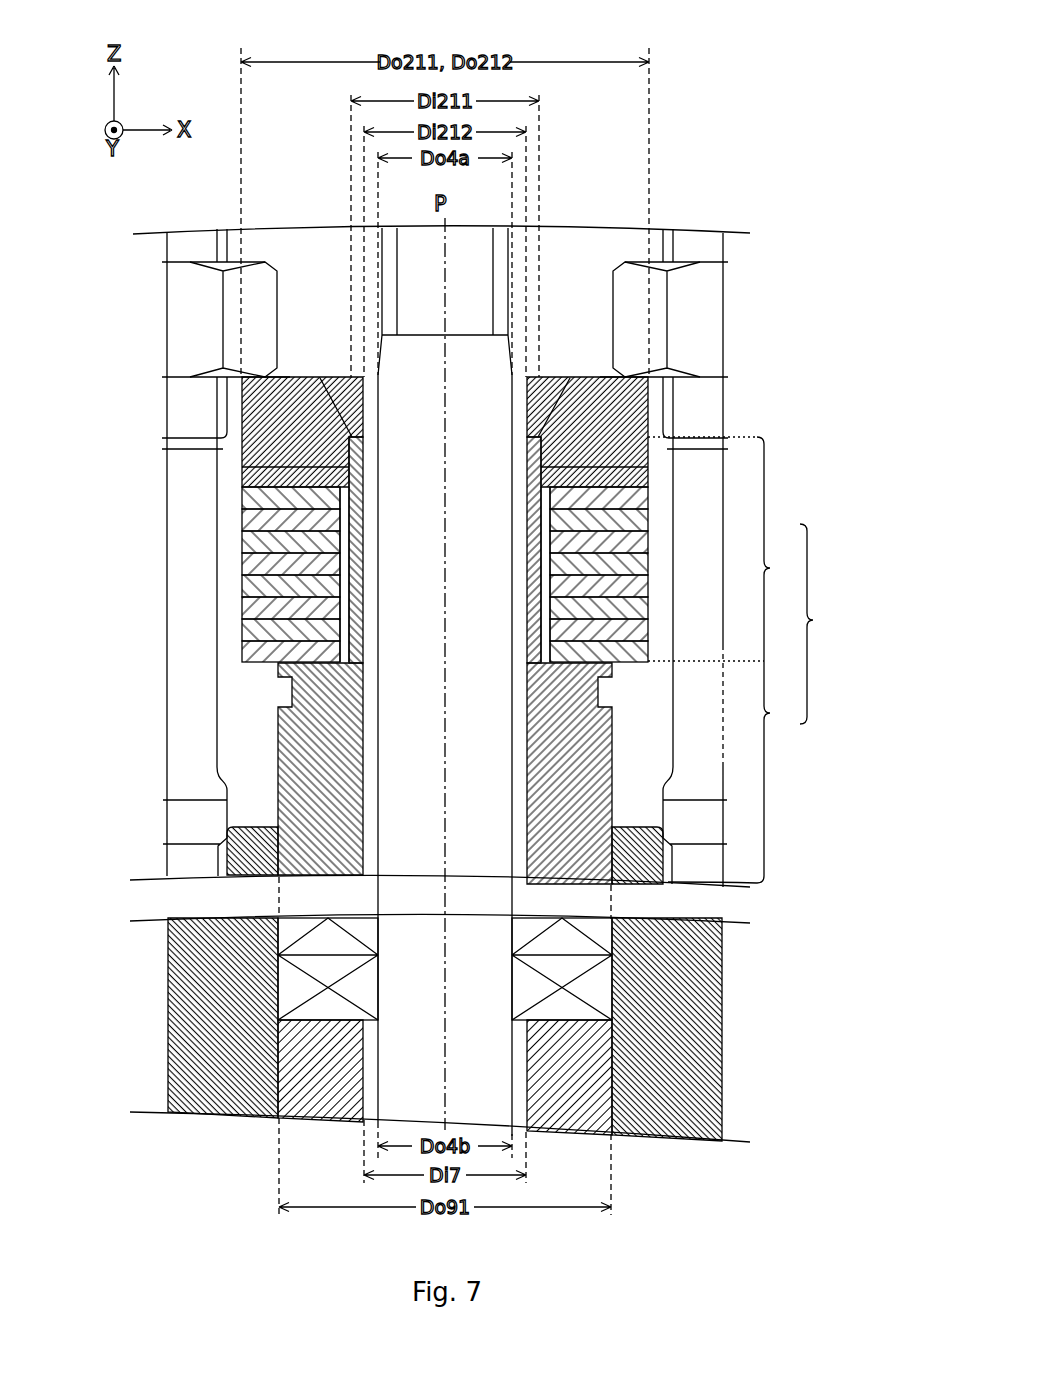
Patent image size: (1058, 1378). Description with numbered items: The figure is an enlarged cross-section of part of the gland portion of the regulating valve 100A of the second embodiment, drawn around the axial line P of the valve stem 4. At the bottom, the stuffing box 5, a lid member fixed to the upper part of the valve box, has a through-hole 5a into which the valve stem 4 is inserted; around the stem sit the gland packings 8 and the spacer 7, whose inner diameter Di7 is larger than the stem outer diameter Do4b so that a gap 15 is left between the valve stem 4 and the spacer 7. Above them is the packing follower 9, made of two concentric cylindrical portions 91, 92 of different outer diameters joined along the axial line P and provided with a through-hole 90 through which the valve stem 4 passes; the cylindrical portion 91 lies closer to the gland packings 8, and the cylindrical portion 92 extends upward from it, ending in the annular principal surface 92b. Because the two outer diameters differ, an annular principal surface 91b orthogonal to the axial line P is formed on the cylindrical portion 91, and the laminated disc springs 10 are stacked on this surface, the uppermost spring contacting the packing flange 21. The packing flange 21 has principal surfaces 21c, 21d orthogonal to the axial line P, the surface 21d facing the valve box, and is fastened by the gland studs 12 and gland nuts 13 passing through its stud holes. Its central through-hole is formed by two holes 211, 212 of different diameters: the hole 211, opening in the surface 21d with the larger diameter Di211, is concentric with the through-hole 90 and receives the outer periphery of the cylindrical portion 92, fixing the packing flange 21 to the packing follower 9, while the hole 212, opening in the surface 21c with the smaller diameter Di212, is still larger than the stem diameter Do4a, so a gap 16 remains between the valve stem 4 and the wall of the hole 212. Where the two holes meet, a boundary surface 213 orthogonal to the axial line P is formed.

The regulating valve 100A is at (771, 108).
The valve stem 4 is at (400, 692).
The stuffing box 5 is at (705, 1088).
The through-hole 5a is at (620, 1050).
The spacer 7 is at (297, 1050).
The gland packings 8 is at (287, 983).
The packing follower 9 is at (815, 624).
The through-hole 90 is at (524, 699).
The cylindrical portion 91 is at (539, 660).
The principal surface 91b is at (250, 649).
The cylindrical portion 92 is at (724, 549).
The principal surface 92b is at (553, 380).
The disc springs 10 is at (253, 587).
The gland studs 12 is at (185, 543).
The gland nuts 13 is at (180, 308).
The gap 15 is at (370, 752).
The gap 16 is at (520, 375).
The packing flange 21 is at (243, 414).
The hole 211 is at (243, 466).
The hole 212 is at (360, 440).
The boundary surface 213 is at (313, 377).
The principal surface 21c is at (297, 380).
The principal surface 21d is at (245, 497).